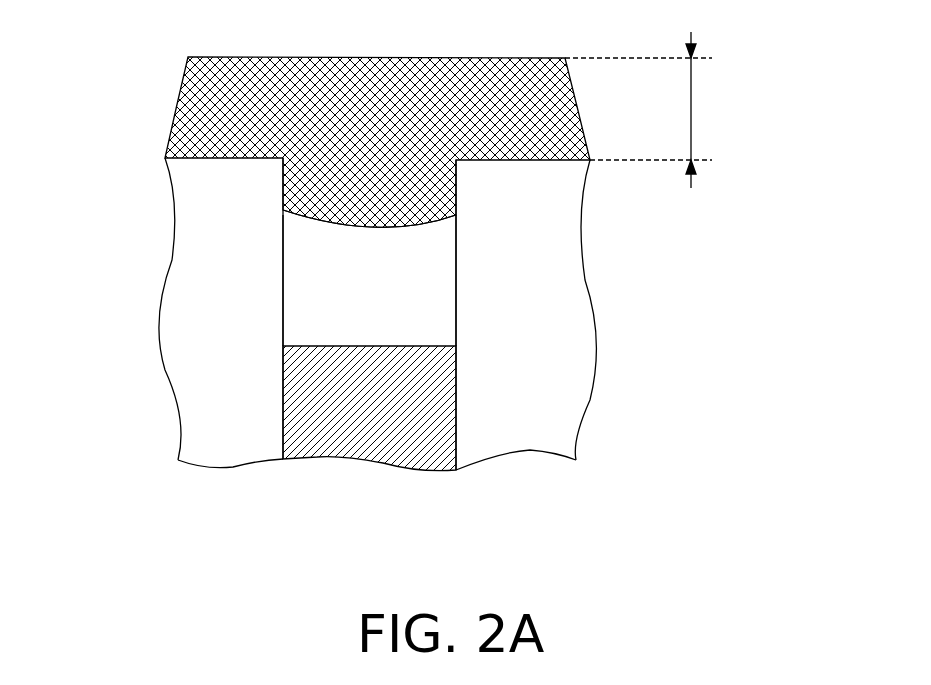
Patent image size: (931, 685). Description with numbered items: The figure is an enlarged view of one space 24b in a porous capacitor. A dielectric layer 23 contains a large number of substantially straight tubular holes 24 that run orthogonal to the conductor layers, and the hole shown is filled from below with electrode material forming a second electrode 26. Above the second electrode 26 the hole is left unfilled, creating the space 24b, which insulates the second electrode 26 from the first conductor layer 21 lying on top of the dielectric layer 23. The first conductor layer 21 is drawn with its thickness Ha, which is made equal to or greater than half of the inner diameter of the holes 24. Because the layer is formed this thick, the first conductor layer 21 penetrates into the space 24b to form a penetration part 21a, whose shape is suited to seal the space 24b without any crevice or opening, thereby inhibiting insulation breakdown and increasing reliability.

The first conductor layer 21 is at (183, 127).
The penetration part 21a is at (353, 193).
The dielectric layer 23 is at (185, 300).
The holes 24 is at (456, 278).
The space 24b is at (390, 291).
The second electrode 26 is at (363, 447).
The thickness of the first conductor layer Ha is at (693, 107).